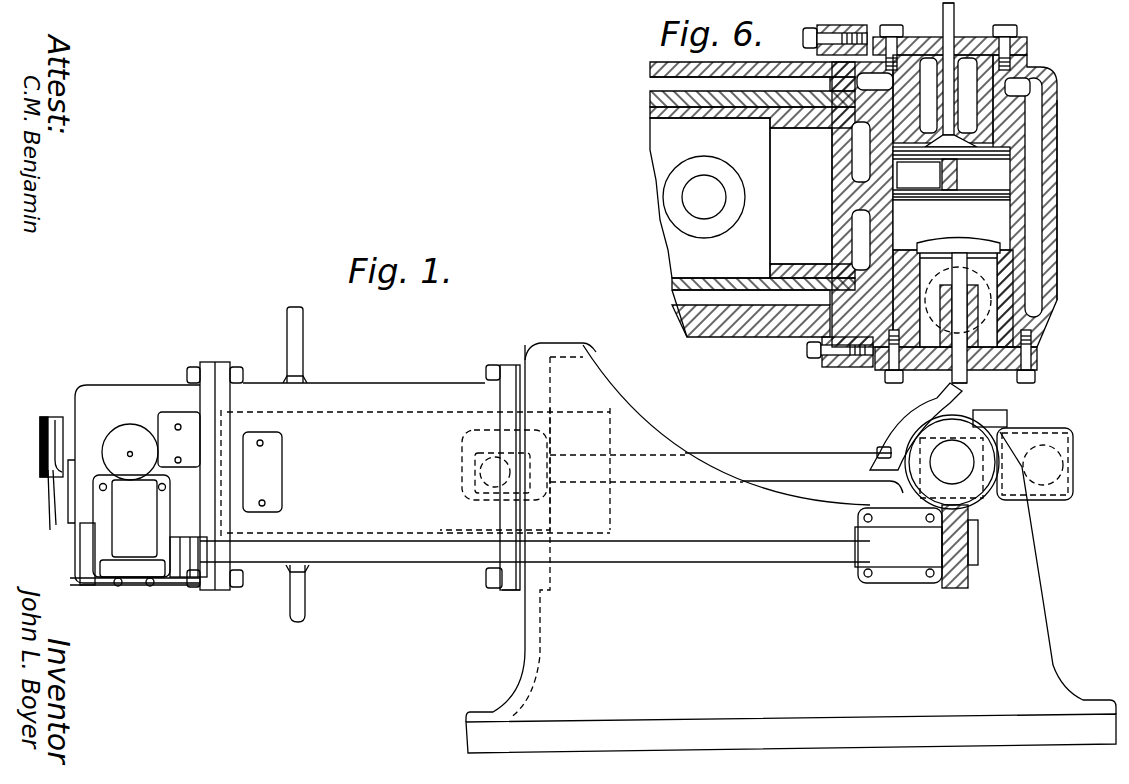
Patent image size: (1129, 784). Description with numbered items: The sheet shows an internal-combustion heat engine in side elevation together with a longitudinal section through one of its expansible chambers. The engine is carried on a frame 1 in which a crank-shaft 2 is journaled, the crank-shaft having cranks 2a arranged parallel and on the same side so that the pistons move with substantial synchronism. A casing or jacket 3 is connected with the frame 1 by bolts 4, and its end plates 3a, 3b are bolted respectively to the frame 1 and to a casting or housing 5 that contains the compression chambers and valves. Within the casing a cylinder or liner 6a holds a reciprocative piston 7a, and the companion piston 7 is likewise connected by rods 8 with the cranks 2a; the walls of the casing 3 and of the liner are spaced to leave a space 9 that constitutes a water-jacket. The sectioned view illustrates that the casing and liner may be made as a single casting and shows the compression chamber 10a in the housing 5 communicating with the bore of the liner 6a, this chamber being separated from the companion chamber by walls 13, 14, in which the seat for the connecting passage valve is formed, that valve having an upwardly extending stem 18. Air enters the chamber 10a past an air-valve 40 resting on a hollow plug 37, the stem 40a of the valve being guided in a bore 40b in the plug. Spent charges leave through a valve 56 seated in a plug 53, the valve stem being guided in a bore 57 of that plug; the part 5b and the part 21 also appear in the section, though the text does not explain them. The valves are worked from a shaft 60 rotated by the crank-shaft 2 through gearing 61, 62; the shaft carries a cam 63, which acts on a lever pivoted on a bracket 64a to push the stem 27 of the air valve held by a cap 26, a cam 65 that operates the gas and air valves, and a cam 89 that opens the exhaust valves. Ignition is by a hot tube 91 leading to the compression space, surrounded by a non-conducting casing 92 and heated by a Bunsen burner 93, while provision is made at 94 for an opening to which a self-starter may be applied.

In FIG. 1, the frame 1 is at (714, 602).
In FIG. 1, the crank-shaft 2 is at (934, 446).
In FIG. 1, the cranks 2a is at (1063, 492).
In FIG. 6, the casing, shell, or jacket 3 is at (761, 214).
In FIG. 1, the casing, shell, or jacket 3 is at (415, 464).
In FIG. 6, the end plate or flange 3a is at (828, 25).
In FIG. 1, the end plate or flange 3a is at (222, 367).
In FIG. 1, the end plate or flange 3b is at (500, 397).
In FIG. 1, the bolts 4 is at (498, 592).
In FIG. 6, the casting or housing 5 is at (1066, 200).
In FIG. 1, the casting or housing 5 is at (134, 472).
In FIG. 6, the valve stem 5b is at (955, 272).
In FIG. 6, the cylinder, liner, or barrel 6a is at (673, 305).
In FIG. 1, the piston 7 is at (611, 521).
In FIG. 6, the piston 7a is at (752, 260).
In FIG. 1, the rods 8 is at (794, 457).
In FIG. 6, the space 9 is at (652, 86).
In FIG. 6, the chamber or cavity 10a is at (1057, 202).
In FIG. 6, the wall 13 is at (1003, 207).
In FIG. 6, the wall 14 is at (951, 173).
In FIG. 6, the stem 18 is at (941, 170).
In FIG. 6, the slot channel 21 is at (1033, 280).
In FIG. 1, the cap or flange 26 is at (116, 430).
In FIG. 1, the stem 27 is at (130, 451).
In FIG. 6, the hollow plug 37 is at (1015, 36).
In FIG. 6, the air-valve 40 is at (967, 140).
In FIG. 6, the stem 40a is at (956, 10).
In FIG. 6, the bore 40b is at (932, 32).
In FIG. 6, the plug 53 is at (993, 368).
In FIG. 6, the valve 56 is at (962, 245).
In FIG. 6, the bore 57 is at (940, 378).
In FIG. 1, the shaft 60 is at (398, 558).
In FIG. 1, the gearing 61 is at (978, 430).
In FIG. 1, the gearing 62 is at (963, 588).
In FIG. 1, the cam 63 is at (178, 540).
In FIG. 1, the bracket 64a is at (131, 526).
In FIG. 1, the cam 65 is at (200, 580).
In FIG. 1, the cam 89 is at (88, 540).
In FIG. 1, the tube 91 is at (54, 428).
In FIG. 1, the non-conducting casing 92 is at (42, 418).
In FIG. 1, the Bunsen burner 93 is at (47, 517).
In FIG. 6, the opening 94 is at (1057, 183).